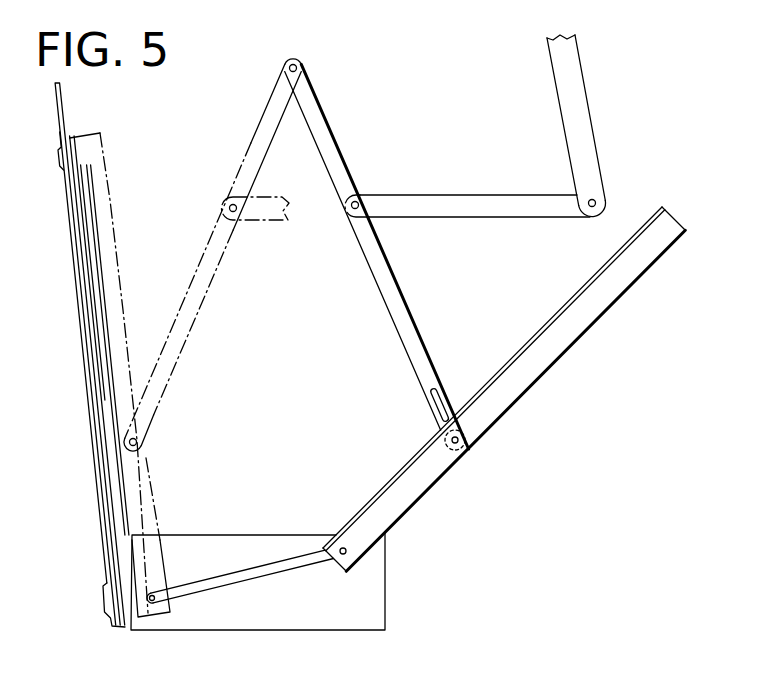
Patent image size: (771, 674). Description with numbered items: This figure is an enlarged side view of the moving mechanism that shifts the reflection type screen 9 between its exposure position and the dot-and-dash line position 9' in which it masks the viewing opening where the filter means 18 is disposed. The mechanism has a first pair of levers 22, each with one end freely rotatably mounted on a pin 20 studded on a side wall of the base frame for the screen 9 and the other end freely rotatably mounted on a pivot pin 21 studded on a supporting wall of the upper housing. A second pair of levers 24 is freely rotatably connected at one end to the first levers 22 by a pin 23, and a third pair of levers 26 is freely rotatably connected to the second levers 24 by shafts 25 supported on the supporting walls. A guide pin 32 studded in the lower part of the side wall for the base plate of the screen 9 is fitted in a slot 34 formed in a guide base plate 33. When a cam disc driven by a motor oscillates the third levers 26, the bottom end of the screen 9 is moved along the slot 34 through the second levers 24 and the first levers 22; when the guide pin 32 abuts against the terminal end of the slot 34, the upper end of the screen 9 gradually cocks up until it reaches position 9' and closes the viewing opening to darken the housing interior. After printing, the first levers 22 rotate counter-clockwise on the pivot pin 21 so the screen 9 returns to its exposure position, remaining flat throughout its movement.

The reflection type screen 9 is at (504, 389).
The dot-and-dash line position of screen 9' is at (87, 379).
The filter means 18 is at (78, 311).
The pin 20 is at (463, 447).
The pivot pin 21 is at (293, 58).
The first pair of levers 22 is at (404, 335).
The pin 23 is at (351, 208).
The second pair of levers 24 is at (392, 195).
The shaft 25 is at (596, 200).
The third pair of levers 26 is at (573, 75).
The guide pin 32 is at (342, 548).
The guide base plate 33 is at (230, 535).
The slot 34 is at (238, 585).